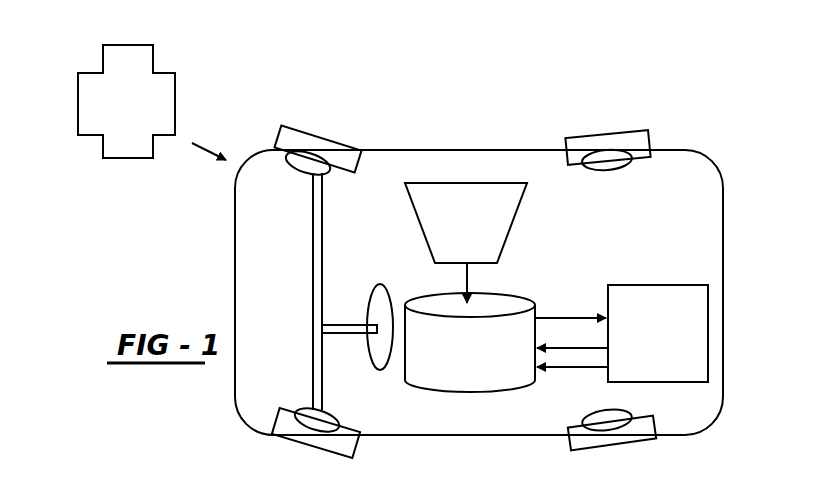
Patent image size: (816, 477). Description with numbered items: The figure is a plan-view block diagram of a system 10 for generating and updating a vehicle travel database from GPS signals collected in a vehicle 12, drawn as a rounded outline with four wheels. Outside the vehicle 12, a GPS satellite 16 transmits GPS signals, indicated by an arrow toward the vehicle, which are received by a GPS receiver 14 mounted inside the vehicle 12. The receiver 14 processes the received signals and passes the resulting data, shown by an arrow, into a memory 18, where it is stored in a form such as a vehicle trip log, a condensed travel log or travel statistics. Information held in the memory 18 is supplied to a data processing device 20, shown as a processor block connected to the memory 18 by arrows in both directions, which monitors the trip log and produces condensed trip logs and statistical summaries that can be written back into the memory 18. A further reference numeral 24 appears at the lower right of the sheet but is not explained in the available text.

The system 10 is at (692, 112).
The vehicle 12 is at (723, 302).
The GPS receiver 14 is at (422, 223).
The GPS satellite 16 is at (155, 58).
The memory 18 is at (453, 390).
The data processing device 20 is at (638, 285).
The component 24 is at (788, 475).